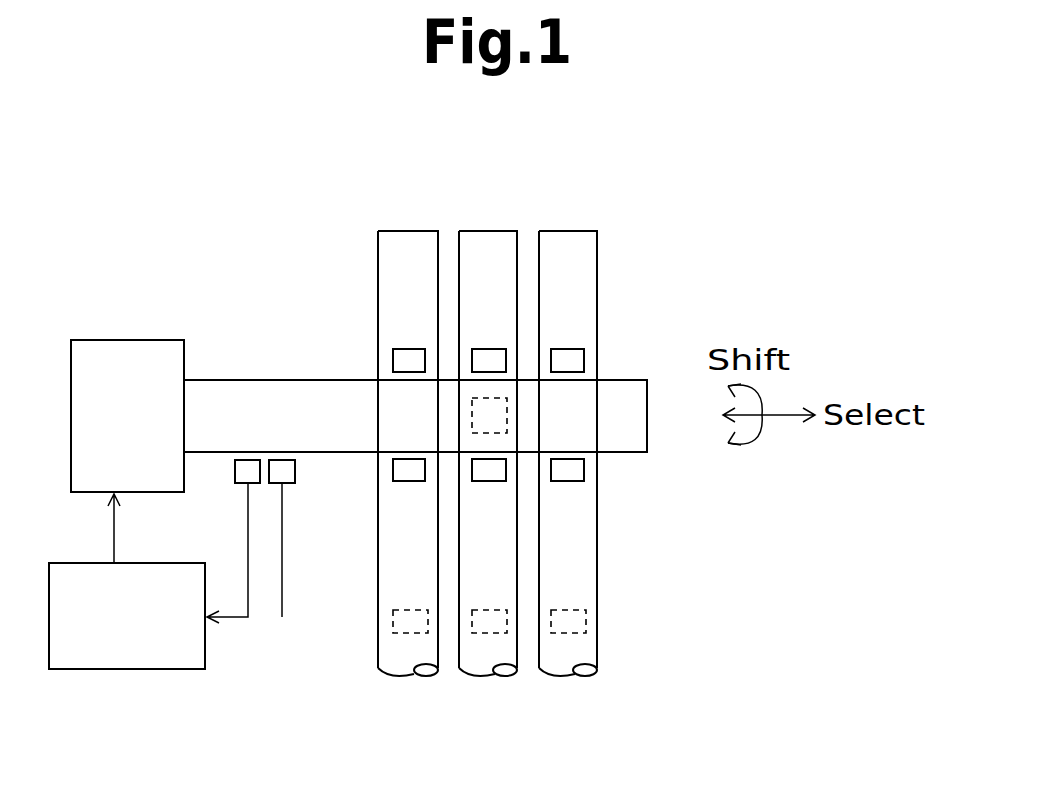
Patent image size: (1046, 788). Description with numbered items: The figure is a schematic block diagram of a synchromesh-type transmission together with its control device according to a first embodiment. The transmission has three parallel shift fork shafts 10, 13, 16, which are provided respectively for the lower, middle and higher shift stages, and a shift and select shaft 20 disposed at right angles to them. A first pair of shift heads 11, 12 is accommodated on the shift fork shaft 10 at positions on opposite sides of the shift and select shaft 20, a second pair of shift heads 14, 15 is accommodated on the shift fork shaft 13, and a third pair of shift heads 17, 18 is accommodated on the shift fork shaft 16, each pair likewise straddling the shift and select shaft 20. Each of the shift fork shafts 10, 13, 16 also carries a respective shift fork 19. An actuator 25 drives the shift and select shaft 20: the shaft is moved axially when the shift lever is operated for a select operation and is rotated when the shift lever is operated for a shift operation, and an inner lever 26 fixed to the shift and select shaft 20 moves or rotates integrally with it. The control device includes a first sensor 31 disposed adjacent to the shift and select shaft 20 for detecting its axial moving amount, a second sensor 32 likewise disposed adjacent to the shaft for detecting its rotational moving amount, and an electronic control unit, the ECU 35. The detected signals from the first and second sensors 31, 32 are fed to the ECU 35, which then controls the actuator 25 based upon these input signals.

The shift fork shaft 10 is at (565, 236).
The shift head 11 is at (584, 470).
The shift head 12 is at (566, 349).
The shift fork shaft 13 is at (485, 236).
The shift head 14 is at (492, 481).
The shift head 15 is at (487, 349).
The shift fork shaft 16 is at (407, 236).
The shift head 17 is at (410, 481).
The shift head 18 is at (410, 349).
The shift fork 19 is at (418, 633).
The shift and select shaft 20 is at (647, 412).
The actuator 25 is at (108, 430).
The inner lever 26 is at (507, 412).
The first sensor 31 is at (295, 470).
The second sensor 32 is at (235, 468).
The electronic control unit (ECU) 35 is at (107, 635).